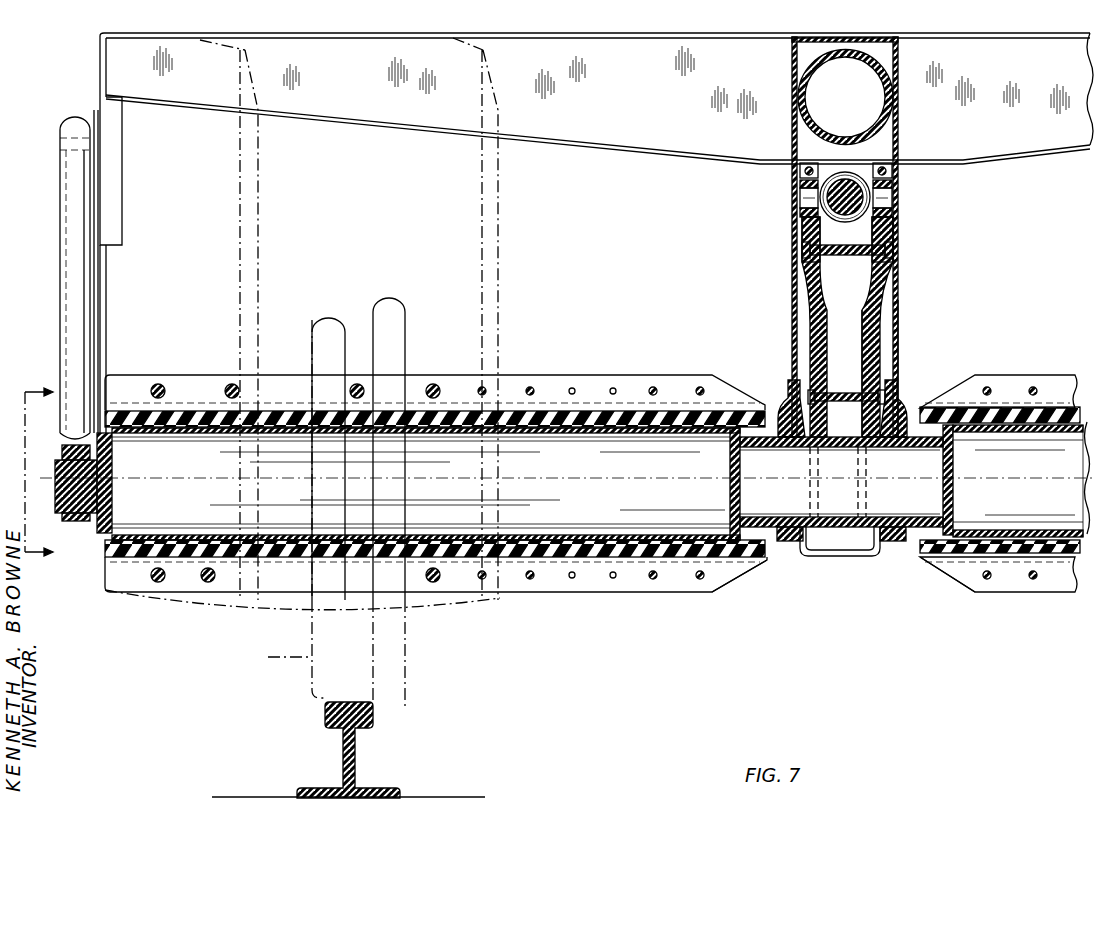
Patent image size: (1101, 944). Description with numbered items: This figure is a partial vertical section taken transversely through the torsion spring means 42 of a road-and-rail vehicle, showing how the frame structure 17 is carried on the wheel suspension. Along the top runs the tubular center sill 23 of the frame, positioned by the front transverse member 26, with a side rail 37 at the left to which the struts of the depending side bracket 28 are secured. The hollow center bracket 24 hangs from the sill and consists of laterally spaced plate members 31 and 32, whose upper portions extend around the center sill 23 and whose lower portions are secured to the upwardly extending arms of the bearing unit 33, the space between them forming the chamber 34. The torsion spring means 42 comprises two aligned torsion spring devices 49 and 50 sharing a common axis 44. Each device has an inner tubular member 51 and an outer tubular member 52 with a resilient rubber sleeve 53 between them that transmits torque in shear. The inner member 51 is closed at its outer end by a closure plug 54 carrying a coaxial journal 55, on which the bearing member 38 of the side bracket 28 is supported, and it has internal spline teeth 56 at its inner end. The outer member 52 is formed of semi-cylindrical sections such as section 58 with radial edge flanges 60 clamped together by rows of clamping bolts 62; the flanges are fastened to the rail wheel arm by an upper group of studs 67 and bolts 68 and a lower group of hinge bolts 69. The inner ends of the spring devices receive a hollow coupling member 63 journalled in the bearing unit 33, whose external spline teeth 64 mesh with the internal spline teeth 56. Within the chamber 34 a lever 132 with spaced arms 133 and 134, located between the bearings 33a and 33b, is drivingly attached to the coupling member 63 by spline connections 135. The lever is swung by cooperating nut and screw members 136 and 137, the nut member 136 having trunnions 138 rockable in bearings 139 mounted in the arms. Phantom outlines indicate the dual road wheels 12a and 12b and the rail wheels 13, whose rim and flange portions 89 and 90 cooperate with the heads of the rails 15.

The dual road wheel 12a is at (242, 74).
The dual road wheel 12b is at (486, 70).
The rail wheels 13 is at (175, 530).
The rails 15 is at (325, 712).
The frame structure 17 is at (614, 150).
The center sill 23 is at (802, 66).
The center bracket 24 is at (898, 246).
The front transverse member 26 is at (526, 138).
The side bracket 28 is at (60, 290).
The plate member 31 is at (790, 316).
The plate member 32 is at (900, 318).
The bearing unit 33 is at (893, 396).
The bearing 33a is at (782, 400).
The bearing 33b is at (905, 400).
The chamber 34 is at (900, 340).
The side rail 37 is at (100, 45).
The bearing member 38 is at (62, 440).
The torsion spring means 42 is at (945, 583).
The axis 44 is at (644, 480).
The torsion spring device 49 is at (585, 592).
The torsion spring device 50 is at (1018, 592).
The inner tubular member 51 is at (571, 432).
The outer tubular member 52 is at (588, 405).
The resilient sleeve 53 is at (560, 538).
The closure plug 54 is at (112, 478).
The journal 55 is at (55, 490).
The internal spline teeth 56 is at (738, 525).
The semi-cylindrical section 58 is at (660, 388).
The longitudinal edge flange 60 is at (654, 586).
The clamping bolt 62 is at (530, 582).
The coupling member 63 is at (840, 548).
The external spline teeth 64 is at (743, 448).
The stud 67 is at (352, 386).
The bolt 68 is at (160, 384).
The hinge bolt 69 is at (208, 584).
The rim portion 89 is at (322, 698).
The flange portion 90 is at (401, 706).
The lever 132 is at (882, 285).
The lever arm 133 is at (812, 325).
The lever arm 134 is at (878, 302).
The spline connection 135 is at (822, 441).
The nut member 136 is at (802, 236).
The screw 137 is at (850, 192).
The trunnion 138 is at (870, 203).
The bearing 139 is at (893, 180).